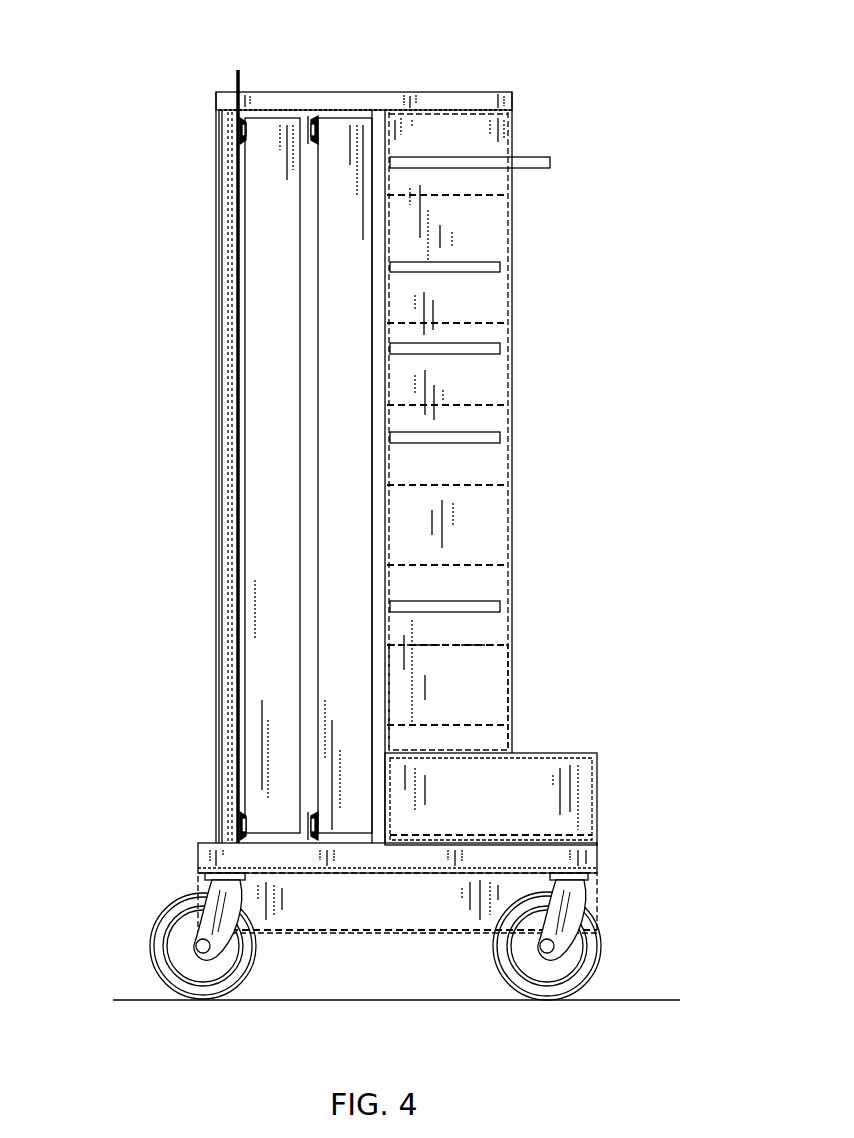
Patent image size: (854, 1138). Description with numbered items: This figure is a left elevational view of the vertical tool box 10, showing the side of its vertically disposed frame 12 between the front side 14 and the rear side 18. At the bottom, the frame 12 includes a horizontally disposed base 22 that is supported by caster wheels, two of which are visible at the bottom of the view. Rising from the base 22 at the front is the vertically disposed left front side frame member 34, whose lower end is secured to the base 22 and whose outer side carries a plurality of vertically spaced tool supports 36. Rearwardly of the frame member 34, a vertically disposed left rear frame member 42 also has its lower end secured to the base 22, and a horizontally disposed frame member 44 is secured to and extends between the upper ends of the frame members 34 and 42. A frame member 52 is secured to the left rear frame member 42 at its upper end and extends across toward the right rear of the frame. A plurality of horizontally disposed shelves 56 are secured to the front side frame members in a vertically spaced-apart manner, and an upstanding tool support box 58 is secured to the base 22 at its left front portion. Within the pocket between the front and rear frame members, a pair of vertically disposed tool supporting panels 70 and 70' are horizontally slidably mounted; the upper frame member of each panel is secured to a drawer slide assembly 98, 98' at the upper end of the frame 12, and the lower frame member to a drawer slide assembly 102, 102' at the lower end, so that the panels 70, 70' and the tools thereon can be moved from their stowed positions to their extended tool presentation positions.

The vertical tool box 10 is at (548, 82).
The frame 12 is at (195, 821).
The front side 14 is at (555, 430).
The rear side 18 is at (195, 405).
The base 22 is at (580, 856).
The left front side frame member 34 is at (495, 667).
The tool supports 36 is at (550, 168).
The left rear frame member 42 is at (228, 333).
The horizontally disposed frame member 44 is at (385, 98).
The frame member 52 is at (245, 78).
The shelves 56 is at (480, 560).
The tool support box 58 is at (598, 776).
The tool supporting panel 70 is at (204, 475).
The tool supporting panel 70' is at (250, 475).
The drawer slide assembly 98 is at (173, 137).
The drawer slide assembly 98' is at (216, 156).
The drawer slide assembly 102 is at (169, 789).
The drawer slide assembly 102' is at (239, 765).